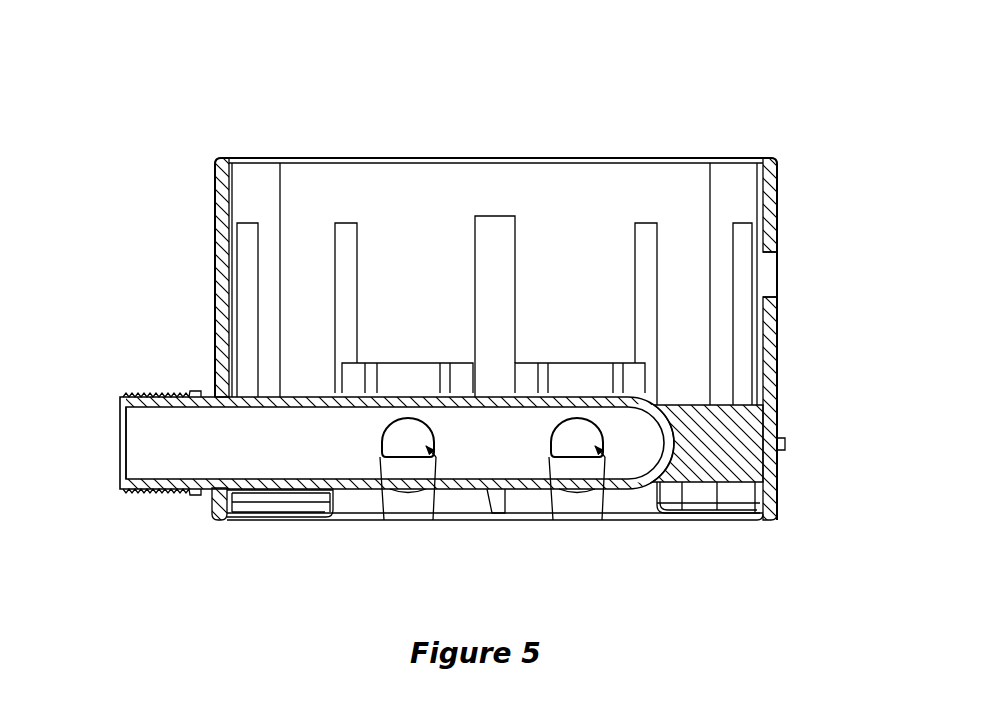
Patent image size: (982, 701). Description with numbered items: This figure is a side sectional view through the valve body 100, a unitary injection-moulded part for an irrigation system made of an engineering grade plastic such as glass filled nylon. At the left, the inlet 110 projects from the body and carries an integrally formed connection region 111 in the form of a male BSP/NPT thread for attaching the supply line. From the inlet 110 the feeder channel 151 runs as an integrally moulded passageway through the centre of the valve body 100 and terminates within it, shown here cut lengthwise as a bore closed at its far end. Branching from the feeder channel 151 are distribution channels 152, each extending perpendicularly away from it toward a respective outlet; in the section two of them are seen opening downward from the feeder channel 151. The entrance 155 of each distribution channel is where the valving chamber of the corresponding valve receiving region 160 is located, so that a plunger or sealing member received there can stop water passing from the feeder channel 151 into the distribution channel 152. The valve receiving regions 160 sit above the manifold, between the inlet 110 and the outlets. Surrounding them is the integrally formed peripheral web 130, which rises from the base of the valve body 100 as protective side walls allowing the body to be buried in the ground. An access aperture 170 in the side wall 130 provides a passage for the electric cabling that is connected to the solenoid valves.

The valve body 100 is at (309, 129).
The inlet 110 is at (116, 443).
The connection region 111 is at (167, 392).
The peripheral web 130 is at (778, 215).
The access aperture 170 is at (777, 273).
The valve receiving region 160 is at (412, 359).
The feeder channel 151 is at (300, 443).
The distribution channel 152 is at (433, 520).
The entrance 155 is at (382, 453).